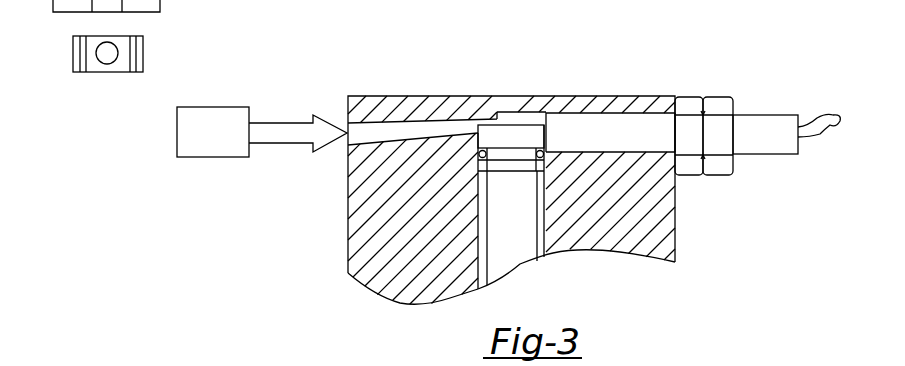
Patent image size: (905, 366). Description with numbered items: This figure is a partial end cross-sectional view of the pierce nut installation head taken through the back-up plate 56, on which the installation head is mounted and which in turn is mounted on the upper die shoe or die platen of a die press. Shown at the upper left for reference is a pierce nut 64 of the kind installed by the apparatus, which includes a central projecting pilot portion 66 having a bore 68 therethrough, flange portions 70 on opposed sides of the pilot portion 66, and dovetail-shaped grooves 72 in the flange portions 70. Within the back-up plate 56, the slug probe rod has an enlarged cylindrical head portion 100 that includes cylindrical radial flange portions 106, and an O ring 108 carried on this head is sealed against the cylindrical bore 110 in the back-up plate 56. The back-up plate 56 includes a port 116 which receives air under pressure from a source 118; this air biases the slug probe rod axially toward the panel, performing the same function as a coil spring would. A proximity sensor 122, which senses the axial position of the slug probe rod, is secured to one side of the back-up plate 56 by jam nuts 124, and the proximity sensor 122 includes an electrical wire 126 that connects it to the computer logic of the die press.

The back-up plate 56 is at (348, 241).
The pierce nut 64 is at (143, 52).
The central projecting pilot portion 66 is at (118, 67).
The bore 68 is at (106, 60).
The flange portions 70 is at (78, 49).
The dovetail-shaped grooves 72 is at (82, 57).
The enlarged cylindrical head portion 100 is at (503, 257).
The cylindrical radial flange portions 106 is at (513, 167).
The O ring 108 is at (547, 144).
The cylindrical bore 110 is at (478, 247).
The port 116 is at (408, 127).
The source 118 is at (227, 157).
The proximity sensor 122 is at (642, 122).
The jam nuts 124 is at (722, 170).
The electrical wire 126 is at (825, 118).